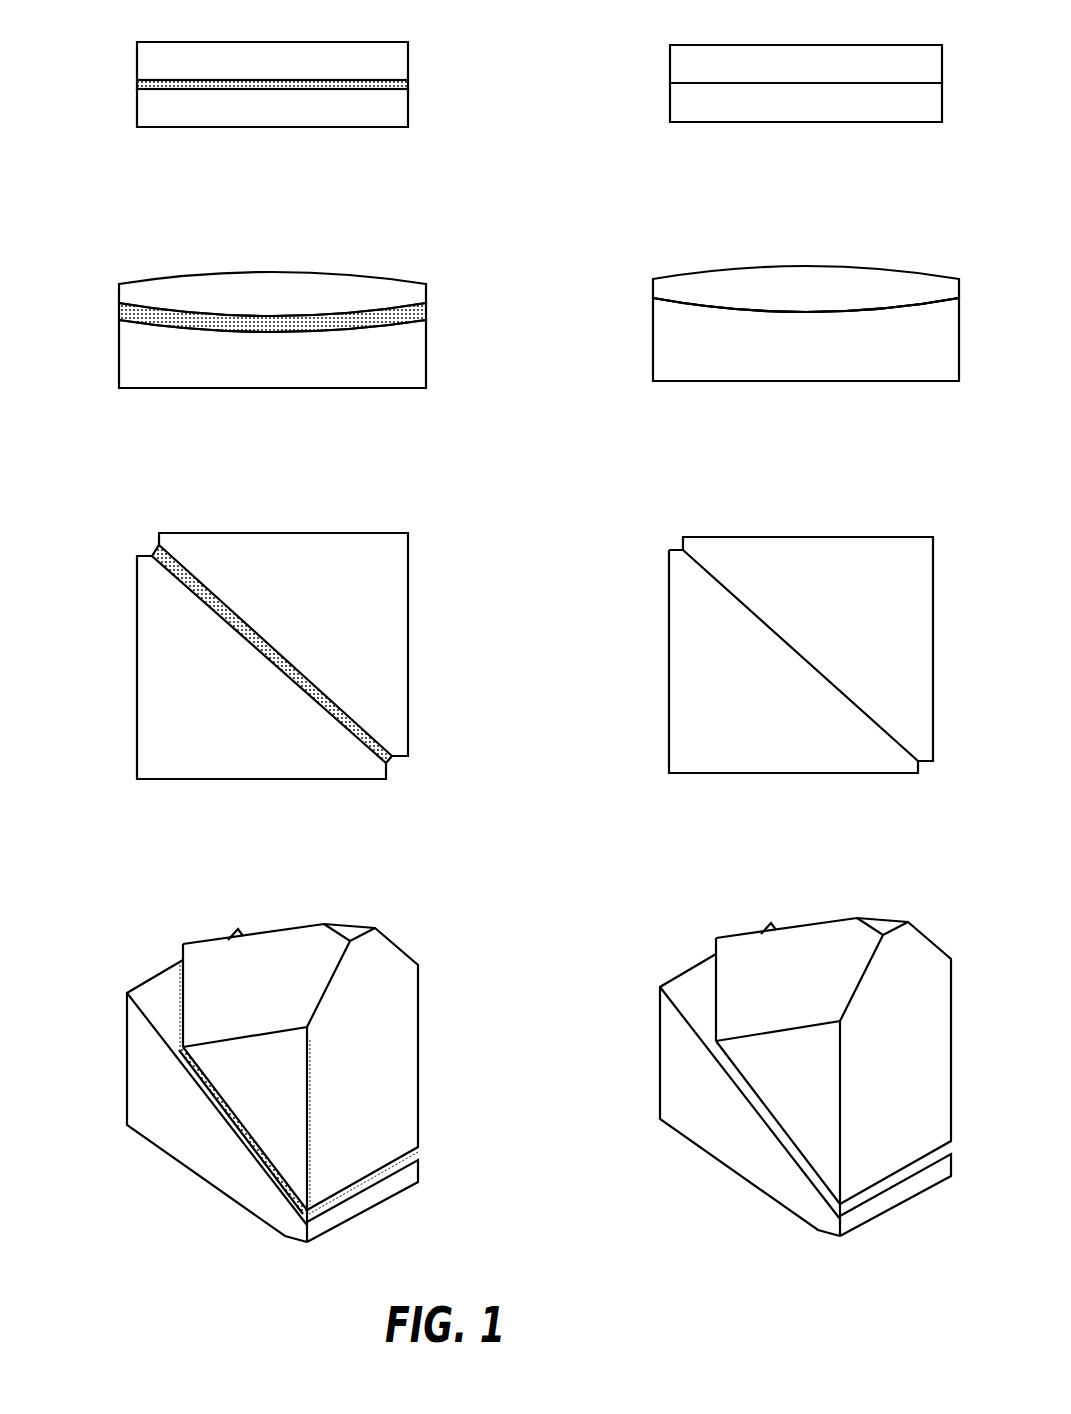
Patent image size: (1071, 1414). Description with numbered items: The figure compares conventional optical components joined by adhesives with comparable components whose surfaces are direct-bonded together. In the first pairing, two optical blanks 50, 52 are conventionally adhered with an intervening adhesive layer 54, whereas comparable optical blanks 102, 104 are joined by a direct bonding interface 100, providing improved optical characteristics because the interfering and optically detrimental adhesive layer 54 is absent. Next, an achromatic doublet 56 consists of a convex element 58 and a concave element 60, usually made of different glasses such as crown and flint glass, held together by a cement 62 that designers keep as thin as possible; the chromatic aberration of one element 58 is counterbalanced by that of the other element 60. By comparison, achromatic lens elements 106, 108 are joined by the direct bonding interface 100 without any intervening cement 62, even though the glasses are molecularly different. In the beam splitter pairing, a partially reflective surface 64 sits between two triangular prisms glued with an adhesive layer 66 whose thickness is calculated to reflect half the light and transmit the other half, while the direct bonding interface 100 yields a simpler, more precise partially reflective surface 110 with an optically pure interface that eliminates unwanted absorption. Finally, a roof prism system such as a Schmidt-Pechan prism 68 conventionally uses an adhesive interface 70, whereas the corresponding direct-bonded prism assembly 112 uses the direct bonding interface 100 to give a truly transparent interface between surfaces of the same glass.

The optical blank 50 is at (137, 62).
The optical blank 52 is at (137, 103).
The adhesive layer 54 is at (408, 83).
The achromatic doublet 56 is at (272, 294).
The convex element 58 is at (119, 294).
The concave element 60 is at (119, 348).
The cement 62 is at (427, 310).
The partially reflective surface 64 is at (240, 608).
The adhesive layer 66 is at (390, 762).
The Schmidt-Pechan prism 68 is at (239, 1055).
The adhesive interface 70 is at (210, 1095).
The direct bonding interface 100 is at (670, 84).
The optical blank 102 is at (714, 43).
The optical blank 104 is at (722, 122).
The achromatic lens element 106 is at (698, 270).
The achromatic lens element 108 is at (706, 384).
The partially reflective surface 110 is at (743, 578).
The directly bonded optical assembly 112 is at (633, 902).